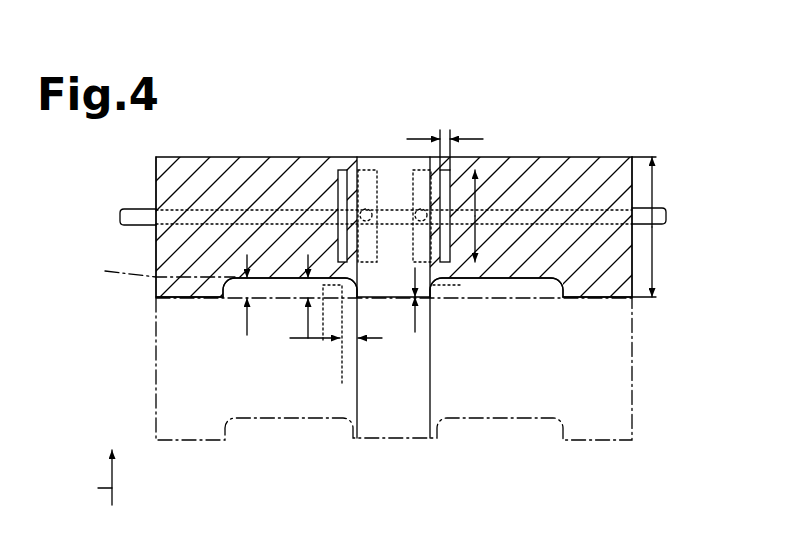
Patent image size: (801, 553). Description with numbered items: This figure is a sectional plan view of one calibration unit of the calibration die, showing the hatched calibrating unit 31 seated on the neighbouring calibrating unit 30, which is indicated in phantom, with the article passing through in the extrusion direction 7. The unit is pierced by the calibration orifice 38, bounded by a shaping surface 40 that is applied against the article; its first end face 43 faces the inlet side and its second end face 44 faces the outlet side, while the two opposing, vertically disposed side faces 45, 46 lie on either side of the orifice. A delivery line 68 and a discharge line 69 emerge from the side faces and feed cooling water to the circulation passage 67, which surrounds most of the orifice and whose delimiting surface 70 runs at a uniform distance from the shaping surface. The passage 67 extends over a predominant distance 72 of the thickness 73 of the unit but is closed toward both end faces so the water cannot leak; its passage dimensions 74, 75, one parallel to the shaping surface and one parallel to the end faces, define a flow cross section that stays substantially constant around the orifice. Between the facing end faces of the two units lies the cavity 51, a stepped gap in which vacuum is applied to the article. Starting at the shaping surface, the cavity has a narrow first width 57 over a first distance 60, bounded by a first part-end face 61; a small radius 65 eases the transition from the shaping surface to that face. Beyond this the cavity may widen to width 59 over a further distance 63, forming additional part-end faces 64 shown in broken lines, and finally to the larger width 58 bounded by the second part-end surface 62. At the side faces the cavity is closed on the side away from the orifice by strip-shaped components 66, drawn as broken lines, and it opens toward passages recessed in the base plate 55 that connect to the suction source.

The extrusion direction 7 is at (108, 487).
The calibrating unit 30 is at (603, 398).
The calibrating unit 31 is at (620, 249).
The calibration orifice 38 is at (399, 196).
The shaping surface 40 is at (364, 186).
The first end face 43 is at (178, 300).
The second end face 44 is at (185, 157).
The side face 45 is at (156, 197).
The side face 46 is at (633, 193).
The cavity 51 is at (287, 298).
The base plate 55 is at (512, 5).
The first width 57 is at (365, 302).
The width 58 is at (229, 278).
The width 59 is at (247, 255).
The first distance 60 is at (353, 345).
The first part-end face 61 is at (415, 327).
The second part-end surface 62 is at (257, 298).
The further distance 63 is at (326, 345).
The additional part-end face 64 is at (336, 375).
The radius 65 is at (390, 327).
The strip-shaped component 66 is at (203, 300).
The circulation passage 67 is at (305, 276).
The delivery line 68 is at (128, 218).
The discharge line 69 is at (668, 215).
The delimiting surface 70 is at (336, 190).
The predominant distance 72 is at (515, 298).
The thickness 73 is at (653, 263).
The passage dimension 74 is at (479, 229).
The passage dimension 75 is at (444, 139).